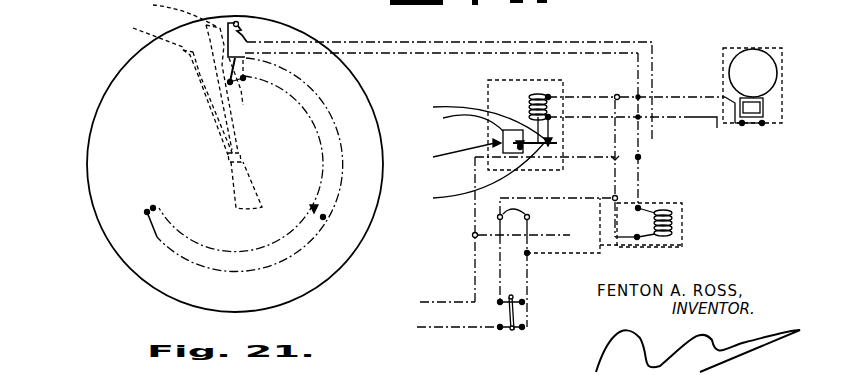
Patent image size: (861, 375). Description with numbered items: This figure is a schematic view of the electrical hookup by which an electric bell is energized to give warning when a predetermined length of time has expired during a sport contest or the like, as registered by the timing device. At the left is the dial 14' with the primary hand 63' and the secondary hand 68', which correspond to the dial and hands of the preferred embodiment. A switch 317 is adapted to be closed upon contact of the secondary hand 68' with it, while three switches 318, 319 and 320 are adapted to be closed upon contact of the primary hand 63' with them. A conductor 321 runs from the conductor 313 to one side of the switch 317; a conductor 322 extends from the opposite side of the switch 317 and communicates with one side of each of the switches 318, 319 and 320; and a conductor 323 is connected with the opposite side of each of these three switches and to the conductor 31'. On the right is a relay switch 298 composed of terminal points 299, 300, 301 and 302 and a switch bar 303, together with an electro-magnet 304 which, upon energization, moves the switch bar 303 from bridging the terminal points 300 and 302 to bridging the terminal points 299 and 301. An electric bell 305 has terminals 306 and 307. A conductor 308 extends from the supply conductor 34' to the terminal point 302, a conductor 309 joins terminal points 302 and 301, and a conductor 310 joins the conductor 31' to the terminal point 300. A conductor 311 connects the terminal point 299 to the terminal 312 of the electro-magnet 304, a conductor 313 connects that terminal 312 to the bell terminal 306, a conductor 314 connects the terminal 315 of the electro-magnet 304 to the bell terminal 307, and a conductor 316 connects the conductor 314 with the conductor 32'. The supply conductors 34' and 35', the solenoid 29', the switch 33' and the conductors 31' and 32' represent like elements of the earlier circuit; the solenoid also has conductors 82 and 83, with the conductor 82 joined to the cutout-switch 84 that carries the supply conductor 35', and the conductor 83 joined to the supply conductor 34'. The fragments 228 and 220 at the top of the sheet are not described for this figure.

The dial 14' is at (227, 164).
The secondary hand 68' is at (375, 13).
The primary hand 63' is at (378, 25).
The switch 317 is at (243, 27).
The switch 318 is at (235, 84).
The switch 319 is at (313, 207).
The switch 320 is at (148, 211).
The conductor 321 is at (380, 41).
The conductor 322 is at (321, 100).
The conductor 323 is at (287, 240).
The relay switch 298 is at (452, 153).
The terminal point 299 is at (553, 134).
The terminal point 300 is at (566, 146).
The terminal point 301 is at (503, 135).
The terminal point 302 is at (518, 150).
The switch bar 303 is at (542, 146).
The electro-magnet 304 is at (530, 95).
The electric bell 305 is at (752, 60).
The terminal 306 is at (762, 125).
The terminal 307 is at (741, 125).
The conductor 308 is at (475, 223).
The conductor 309 is at (460, 124).
The conductor 310 is at (474, 176).
The conductor 311 is at (476, 119).
The terminal 312 is at (550, 116).
The conductor 313 is at (693, 119).
The conductor 314 is at (673, 97).
The terminal 315 is at (549, 96).
The conductor 316 is at (617, 141).
The conductor 31' is at (656, 130).
The solenoid 29' is at (680, 225).
The conductor 32' is at (604, 227).
The switch 33' is at (555, 216).
The supply conductor 34' is at (559, 225).
The supply conductor 35' is at (530, 281).
The conductor 82 is at (453, 327).
The conductor 83 is at (443, 301).
The cutout-switch 84 is at (512, 331).
The element of adjacent figure 228 is at (714, 6).
The element of adjacent figure 220 is at (799, 5).